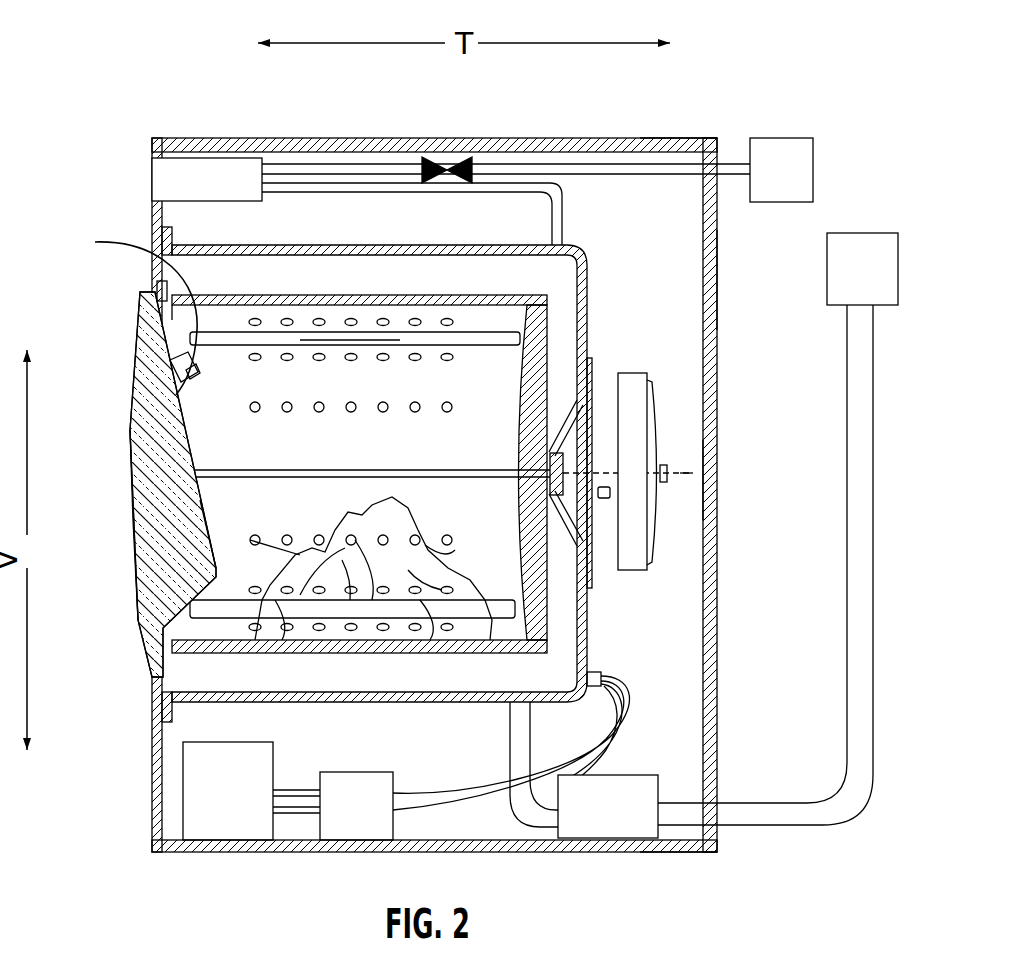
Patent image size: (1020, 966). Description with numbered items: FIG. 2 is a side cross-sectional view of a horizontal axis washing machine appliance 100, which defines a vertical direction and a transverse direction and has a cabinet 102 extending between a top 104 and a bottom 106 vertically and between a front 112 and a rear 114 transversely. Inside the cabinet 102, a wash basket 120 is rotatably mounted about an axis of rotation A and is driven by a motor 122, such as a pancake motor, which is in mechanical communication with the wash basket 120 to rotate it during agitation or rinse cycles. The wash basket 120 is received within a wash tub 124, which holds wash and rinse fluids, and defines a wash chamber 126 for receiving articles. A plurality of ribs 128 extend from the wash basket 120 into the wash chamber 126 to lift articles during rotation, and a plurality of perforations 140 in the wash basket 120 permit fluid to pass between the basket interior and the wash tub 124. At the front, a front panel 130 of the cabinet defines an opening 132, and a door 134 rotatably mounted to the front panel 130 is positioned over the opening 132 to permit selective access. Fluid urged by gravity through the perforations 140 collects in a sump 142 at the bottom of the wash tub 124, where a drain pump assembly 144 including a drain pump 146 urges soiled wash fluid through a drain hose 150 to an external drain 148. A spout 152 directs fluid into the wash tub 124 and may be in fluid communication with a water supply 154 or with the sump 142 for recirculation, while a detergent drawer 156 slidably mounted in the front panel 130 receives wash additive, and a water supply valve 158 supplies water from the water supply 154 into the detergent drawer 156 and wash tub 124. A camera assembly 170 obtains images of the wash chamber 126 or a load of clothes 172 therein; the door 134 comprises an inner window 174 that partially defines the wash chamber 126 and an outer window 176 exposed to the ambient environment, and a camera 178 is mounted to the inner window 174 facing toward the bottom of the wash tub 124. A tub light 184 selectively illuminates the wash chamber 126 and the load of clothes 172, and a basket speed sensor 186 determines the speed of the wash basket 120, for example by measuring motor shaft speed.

The washing machine appliance 100 is at (177, 78).
The cabinet 102 is at (718, 480).
The top 104 is at (730, 140).
The bottom 106 is at (745, 846).
The front 112 is at (142, 138).
The rear 114 is at (706, 300).
The wash basket 120 is at (352, 298).
The motor 122 is at (633, 412).
The wash tub 124 is at (588, 312).
The wash chamber 126 is at (218, 428).
The ribs 128 is at (289, 470).
The front panel 130 is at (150, 675).
The opening 132 is at (185, 330).
The door 134 is at (152, 527).
The perforations 140 is at (412, 412).
The sump 142 is at (548, 662).
The drain pump assembly 144 is at (682, 728).
The drain pump 146 is at (625, 821).
The external drain 148 is at (880, 286).
The drain hose 150 is at (847, 606).
The spout 152 is at (563, 216).
The water supply 154 is at (799, 186).
The detergent drawer 156 is at (216, 180).
The water supply valve 158 is at (444, 157).
The camera assembly 170 is at (165, 368).
The load of clothes 172 is at (378, 606).
The inner window 174 is at (212, 525).
The outer window 176 is at (131, 556).
The camera 178 is at (95, 241).
The tub light 184 is at (157, 292).
The basket speed sensor 186 is at (604, 500).
The axis of rotation A is at (693, 473).